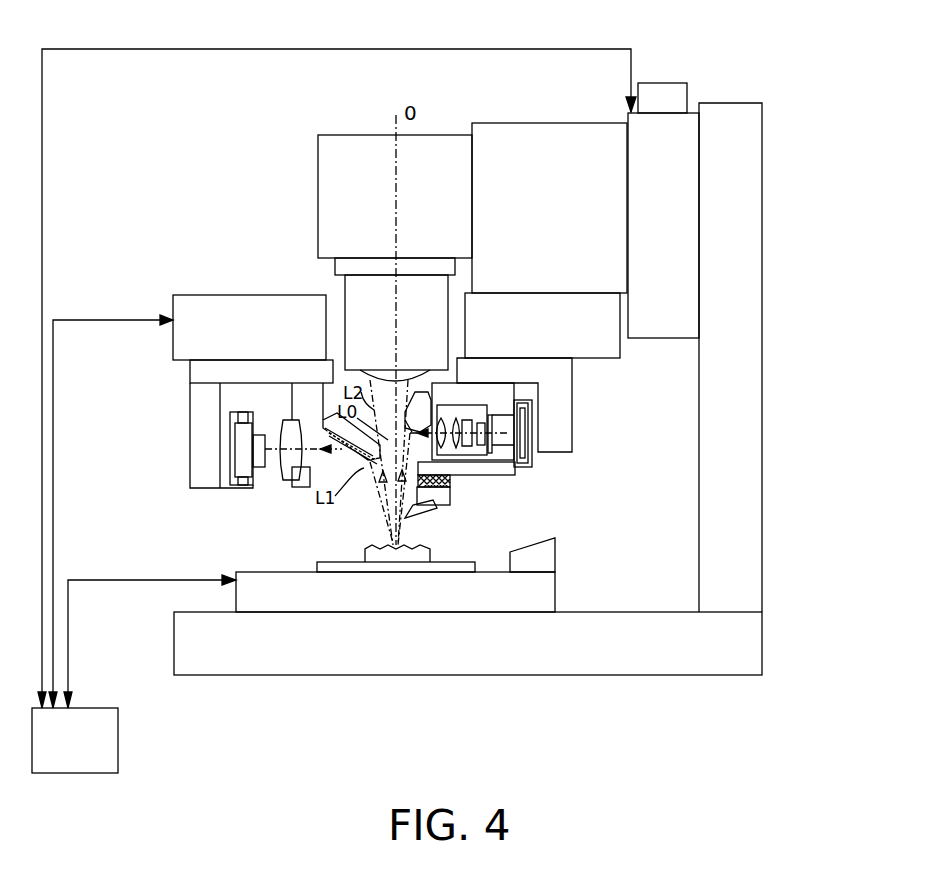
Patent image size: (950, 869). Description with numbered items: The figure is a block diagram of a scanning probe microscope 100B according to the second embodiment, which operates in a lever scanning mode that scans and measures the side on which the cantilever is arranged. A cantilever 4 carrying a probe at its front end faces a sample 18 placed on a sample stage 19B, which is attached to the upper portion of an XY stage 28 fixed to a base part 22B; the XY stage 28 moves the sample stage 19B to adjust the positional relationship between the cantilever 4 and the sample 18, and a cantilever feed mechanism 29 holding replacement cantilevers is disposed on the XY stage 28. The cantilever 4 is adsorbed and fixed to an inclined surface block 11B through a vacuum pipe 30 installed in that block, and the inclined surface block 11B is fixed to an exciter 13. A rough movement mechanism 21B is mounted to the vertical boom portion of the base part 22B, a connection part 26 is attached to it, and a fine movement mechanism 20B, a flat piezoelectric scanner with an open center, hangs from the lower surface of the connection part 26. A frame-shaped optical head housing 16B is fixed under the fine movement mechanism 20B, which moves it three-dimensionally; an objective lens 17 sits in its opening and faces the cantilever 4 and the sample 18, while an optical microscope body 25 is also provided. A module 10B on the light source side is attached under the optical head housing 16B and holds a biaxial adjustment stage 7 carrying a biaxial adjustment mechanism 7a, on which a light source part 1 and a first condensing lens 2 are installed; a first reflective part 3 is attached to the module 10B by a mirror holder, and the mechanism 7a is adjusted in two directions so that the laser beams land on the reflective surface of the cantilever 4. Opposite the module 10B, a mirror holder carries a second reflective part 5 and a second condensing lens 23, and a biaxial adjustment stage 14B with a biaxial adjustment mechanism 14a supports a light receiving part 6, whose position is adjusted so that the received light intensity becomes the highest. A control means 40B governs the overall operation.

The scanning probe microscope 100B is at (762, 71).
The optical microscope body 25 is at (338, 168).
The objective lens 17 is at (367, 317).
The connection part 26 is at (655, 173).
The rough movement mechanism 21B is at (665, 187).
The base part 22B is at (728, 278).
The fine movement mechanism 20B is at (197, 318).
The optical head housing 16B is at (197, 378).
The light receiving part 6 is at (223, 467).
The biaxial adjustment stage on the beam-receiving side 14B is at (227, 417).
The biaxial adjustment mechanism on the beam-receiving side 14a is at (240, 445).
The second condensing lens 23 is at (293, 437).
The second reflective part 5 is at (325, 425).
The module on the light source side 10B is at (503, 392).
The light source part 1 is at (488, 447).
The first condensing lens 2 is at (505, 458).
The first reflective part 3 is at (520, 404).
The biaxial adjustment stage on the light source side 7 is at (527, 421).
The biaxial adjustment mechanism on the light source side 7a is at (523, 434).
The vacuum pipe 30 is at (468, 489).
The exciter 13 is at (450, 480).
The inclined surface block 11B is at (452, 500).
The cantilever 4 is at (428, 515).
The cantilever feed mechanism 29 is at (547, 549).
The sample 18 is at (393, 547).
The sample stage 19B is at (313, 563).
The XY stage 28 is at (248, 593).
The control means 40B is at (118, 738).